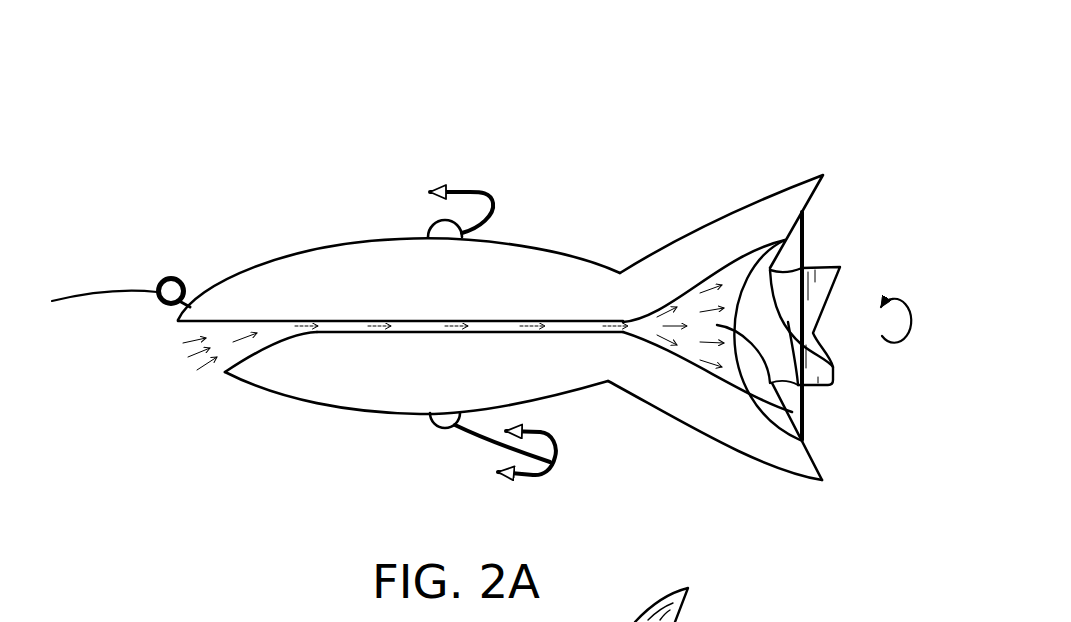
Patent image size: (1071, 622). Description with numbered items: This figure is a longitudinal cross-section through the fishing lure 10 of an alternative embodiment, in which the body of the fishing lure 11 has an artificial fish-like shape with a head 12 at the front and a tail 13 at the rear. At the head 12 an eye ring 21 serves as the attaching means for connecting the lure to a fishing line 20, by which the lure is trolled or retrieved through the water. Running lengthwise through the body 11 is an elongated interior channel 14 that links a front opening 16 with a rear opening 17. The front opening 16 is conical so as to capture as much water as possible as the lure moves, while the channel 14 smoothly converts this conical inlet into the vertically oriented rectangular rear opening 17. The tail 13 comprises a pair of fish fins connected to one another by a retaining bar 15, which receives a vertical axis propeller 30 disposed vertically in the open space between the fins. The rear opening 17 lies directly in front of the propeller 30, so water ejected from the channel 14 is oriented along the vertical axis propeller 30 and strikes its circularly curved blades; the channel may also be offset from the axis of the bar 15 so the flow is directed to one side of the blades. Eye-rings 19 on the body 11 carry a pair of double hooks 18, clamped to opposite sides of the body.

The fishing lure 10 is at (119, 116).
The body of the fishing lure 11 is at (398, 416).
The head 12 is at (300, 248).
The tail 13 is at (785, 175).
The interior channel 14 is at (587, 331).
The retaining bar 15 is at (806, 225).
The front opening 16 is at (182, 330).
The rear opening 17 is at (800, 413).
The hooks 18 is at (455, 192).
The eye-rings 19 is at (430, 228).
The fishing line 20 is at (103, 296).
The eye ring 21 is at (168, 277).
The vertical axis propeller 30 is at (835, 370).